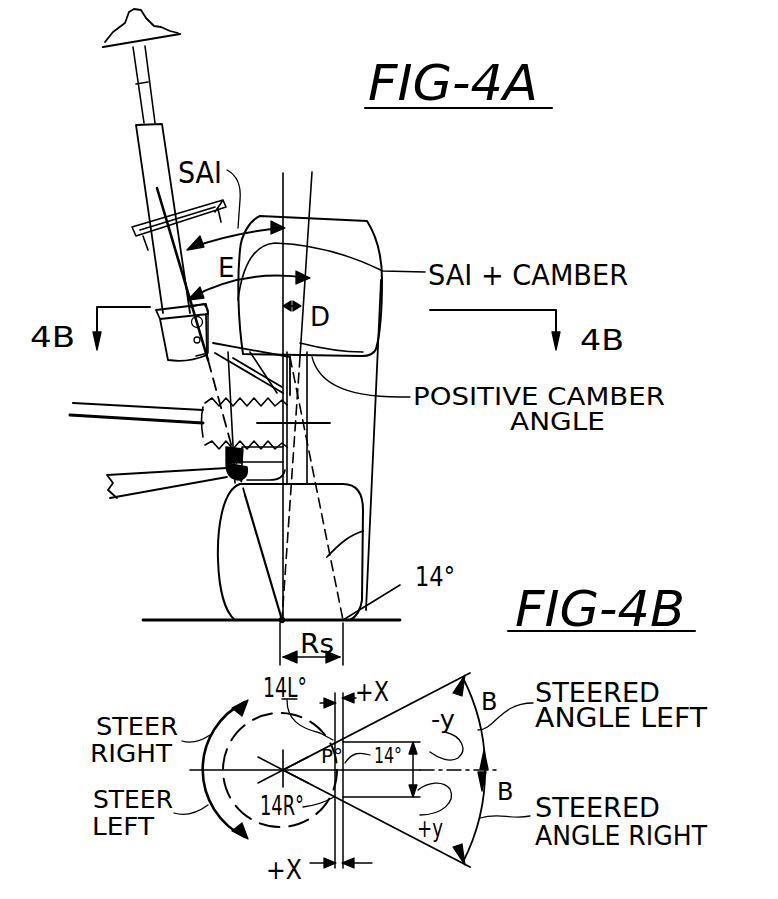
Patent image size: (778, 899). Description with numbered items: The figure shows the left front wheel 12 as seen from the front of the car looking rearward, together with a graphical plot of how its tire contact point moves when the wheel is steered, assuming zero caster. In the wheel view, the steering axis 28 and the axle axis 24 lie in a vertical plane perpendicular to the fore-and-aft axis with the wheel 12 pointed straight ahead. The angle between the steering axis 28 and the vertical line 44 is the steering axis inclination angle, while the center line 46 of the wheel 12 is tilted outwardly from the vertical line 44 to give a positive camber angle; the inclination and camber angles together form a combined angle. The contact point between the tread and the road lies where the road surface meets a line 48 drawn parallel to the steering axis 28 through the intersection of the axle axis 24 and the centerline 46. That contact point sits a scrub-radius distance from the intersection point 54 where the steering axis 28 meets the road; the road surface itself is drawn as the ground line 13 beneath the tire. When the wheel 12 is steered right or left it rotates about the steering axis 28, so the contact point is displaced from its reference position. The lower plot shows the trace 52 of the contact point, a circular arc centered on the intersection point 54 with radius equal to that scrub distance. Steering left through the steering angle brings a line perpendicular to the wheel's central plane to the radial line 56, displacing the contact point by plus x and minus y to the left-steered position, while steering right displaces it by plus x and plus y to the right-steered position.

In FIG. 4A, the front wheel 12 is at (403, 225).
In FIG. 4A, the road surface 13 is at (180, 619).
In FIG. 4A, the axle axis 24 is at (320, 430).
In FIG. 4A, the steering axis 28 is at (210, 371).
In FIG. 4A, the vertical line 44 is at (283, 189).
In FIG. 4A, the center line of the wheel 46 is at (315, 193).
In FIG. 4A, the line parallel to the steering axis 48 is at (363, 531).
In FIG. 4B, the trace of the contact point 52 is at (257, 852).
In FIG. 4A, the intersection point 54 is at (278, 624).
In FIG. 4B, the intersection point 54 is at (283, 768).
In FIG. 4B, the radial line 56 is at (433, 683).